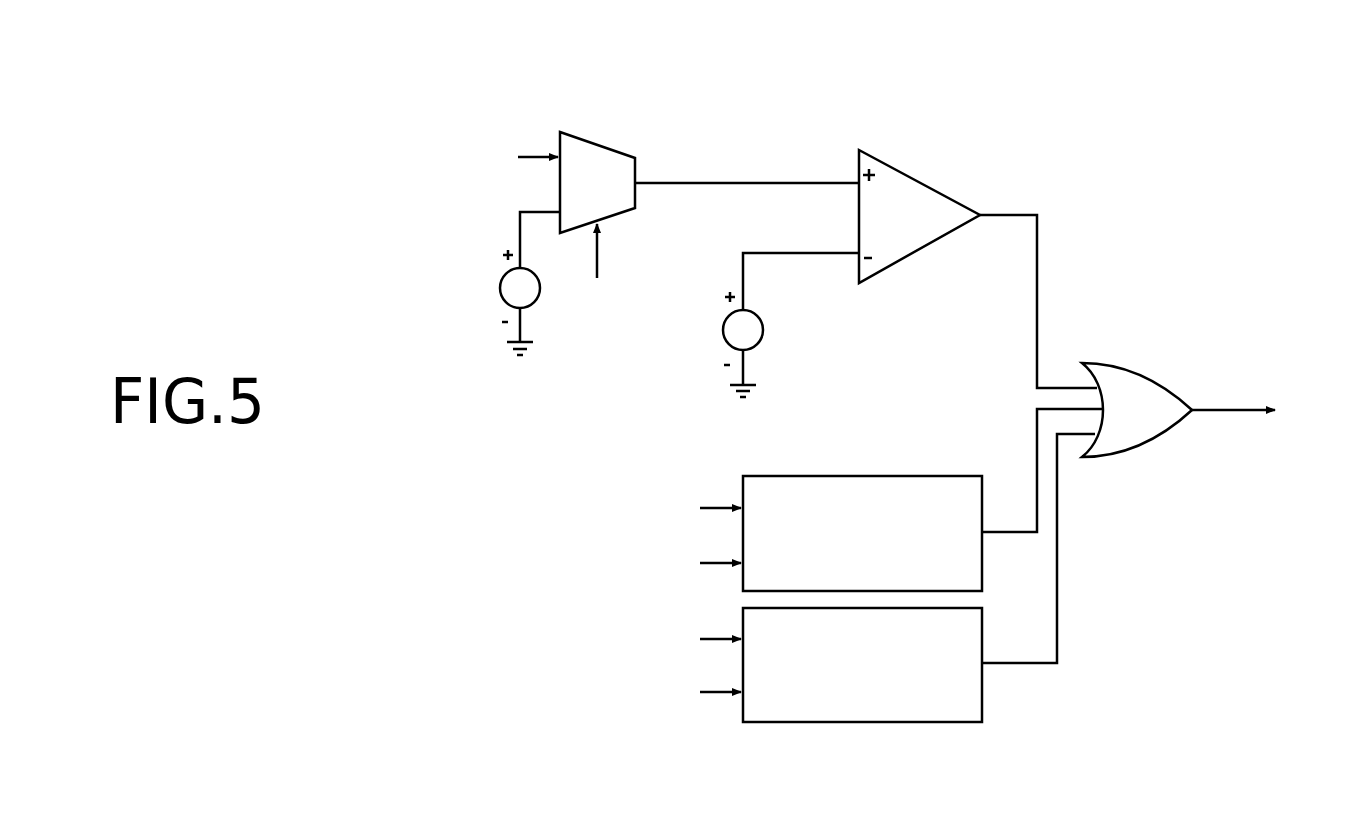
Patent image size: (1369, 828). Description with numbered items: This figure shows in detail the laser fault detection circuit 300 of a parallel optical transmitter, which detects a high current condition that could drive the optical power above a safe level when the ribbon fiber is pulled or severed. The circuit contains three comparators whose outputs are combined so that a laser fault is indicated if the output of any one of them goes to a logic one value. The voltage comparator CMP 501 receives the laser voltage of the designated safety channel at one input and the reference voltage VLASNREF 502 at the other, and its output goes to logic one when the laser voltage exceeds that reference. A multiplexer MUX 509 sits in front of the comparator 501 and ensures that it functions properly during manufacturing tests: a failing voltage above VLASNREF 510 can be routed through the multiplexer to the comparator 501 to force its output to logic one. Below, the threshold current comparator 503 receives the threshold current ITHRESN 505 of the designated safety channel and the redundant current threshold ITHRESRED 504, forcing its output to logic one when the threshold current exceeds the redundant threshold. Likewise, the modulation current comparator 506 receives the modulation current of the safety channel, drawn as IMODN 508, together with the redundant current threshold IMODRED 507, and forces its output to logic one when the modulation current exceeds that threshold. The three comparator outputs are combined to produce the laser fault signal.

The laser fault detection circuit 300 is at (420, 56).
The multiplexer 509 is at (586, 139).
The failing voltage above VLASNREF 510 is at (476, 141).
The voltage comparator CMP 501 is at (930, 185).
The reference voltage VLASNREF 502 is at (722, 326).
The threshold current comparator 503 is at (900, 475).
The threshold current ITHRESN 505 is at (585, 510).
The redundant current threshold ITHRESRED 504 is at (550, 567).
The modulation current comparator 506 is at (868, 725).
The IMODN input 508 is at (605, 641).
The redundant current threshold IMODRED 507 is at (575, 696).